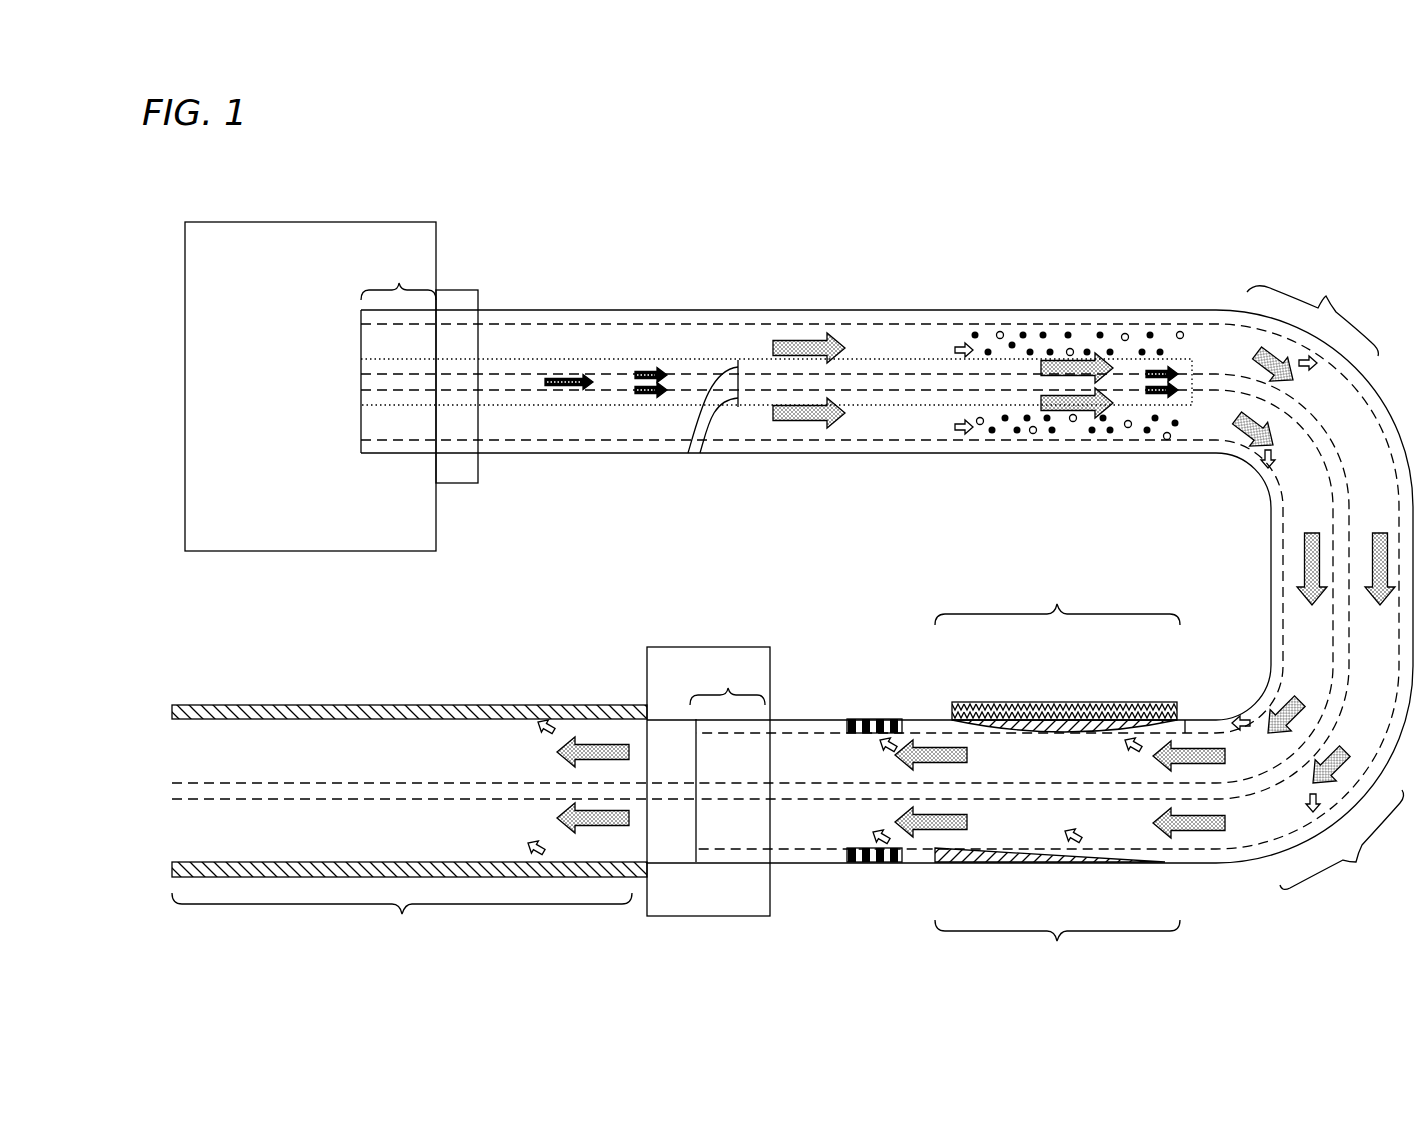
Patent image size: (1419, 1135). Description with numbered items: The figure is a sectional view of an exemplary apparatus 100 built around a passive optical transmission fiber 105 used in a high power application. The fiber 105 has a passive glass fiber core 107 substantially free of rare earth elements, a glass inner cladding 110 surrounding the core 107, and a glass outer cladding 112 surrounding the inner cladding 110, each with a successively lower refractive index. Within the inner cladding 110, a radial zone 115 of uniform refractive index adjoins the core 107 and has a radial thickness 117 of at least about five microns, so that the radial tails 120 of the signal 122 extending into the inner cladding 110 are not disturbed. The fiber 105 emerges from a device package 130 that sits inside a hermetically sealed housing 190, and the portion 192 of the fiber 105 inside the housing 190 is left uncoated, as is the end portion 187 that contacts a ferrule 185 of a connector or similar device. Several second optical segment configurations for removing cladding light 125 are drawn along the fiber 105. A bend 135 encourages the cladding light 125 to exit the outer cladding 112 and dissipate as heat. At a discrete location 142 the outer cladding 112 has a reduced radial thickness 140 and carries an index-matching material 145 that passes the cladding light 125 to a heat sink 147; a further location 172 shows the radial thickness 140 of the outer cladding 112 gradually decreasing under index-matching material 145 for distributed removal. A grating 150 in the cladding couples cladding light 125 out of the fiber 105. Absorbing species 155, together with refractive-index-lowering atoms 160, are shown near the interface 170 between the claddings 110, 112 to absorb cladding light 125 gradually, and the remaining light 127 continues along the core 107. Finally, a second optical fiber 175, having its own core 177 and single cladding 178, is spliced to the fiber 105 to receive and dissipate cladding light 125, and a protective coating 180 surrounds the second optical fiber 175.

The apparatus 100 is at (1294, 201).
The passive optical transmission fiber 105 is at (1113, 238).
The passive glass fiber core 107 is at (512, 380).
The glass optical inner cladding 110 is at (590, 363).
The glass optical outer cladding 112 is at (681, 318).
The radial zone 115 is at (868, 398).
The radial thickness 117 is at (708, 408).
The tails 120 is at (650, 389).
The signal 122 is at (568, 388).
The cladding light 125 is at (802, 412).
The separated particles 127 is at (1180, 376).
The device package 130 is at (214, 280).
The bend 135 is at (1316, 583).
The reduced radial thickness 140 is at (1193, 722).
The discrete location 142 is at (1057, 740).
The index-matching material 145 is at (1020, 722).
The heat sink 147 is at (1102, 710).
The grating 150 is at (878, 719).
The absorbing species 155 is at (1006, 421).
The refractive-index-lowering atoms 160 is at (1074, 421).
The interface 170 is at (1010, 323).
The location 172 is at (1048, 859).
The second optical fiber 175 is at (434, 787).
The core 177 is at (438, 790).
The single cladding 178 is at (329, 752).
The coating 180 is at (510, 705).
The ferrule 185 is at (462, 293).
The end portion 187 is at (727, 758).
The hermetically sealed housing 190 is at (335, 222).
The portion 192 is at (398, 275).